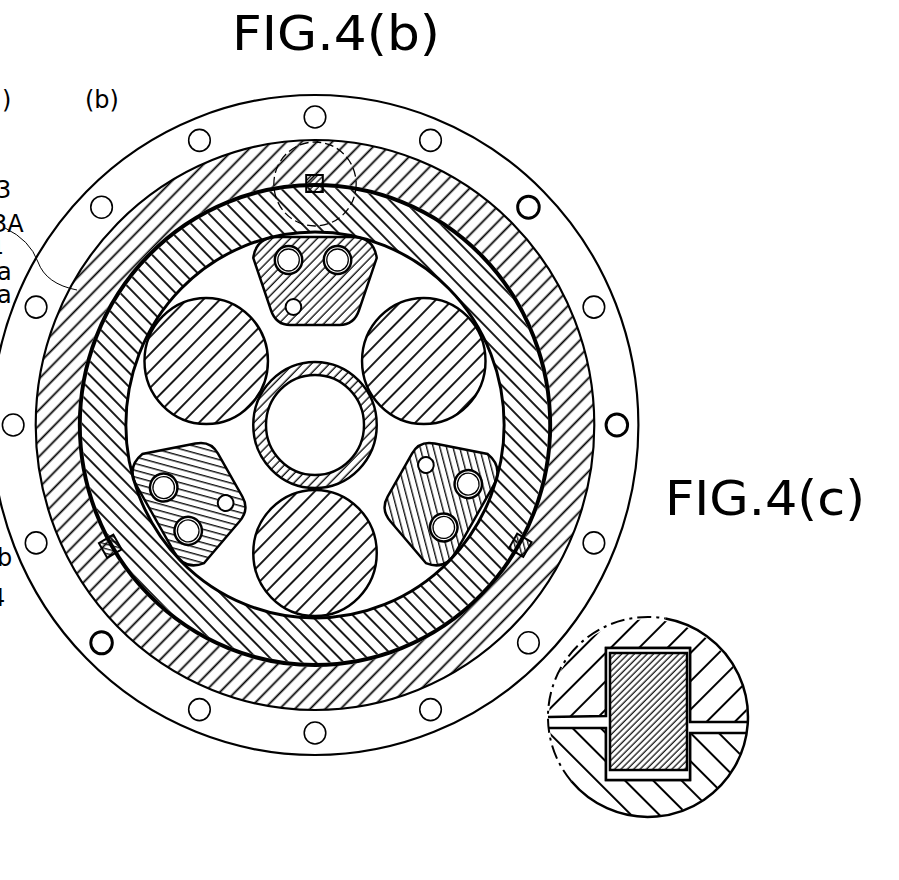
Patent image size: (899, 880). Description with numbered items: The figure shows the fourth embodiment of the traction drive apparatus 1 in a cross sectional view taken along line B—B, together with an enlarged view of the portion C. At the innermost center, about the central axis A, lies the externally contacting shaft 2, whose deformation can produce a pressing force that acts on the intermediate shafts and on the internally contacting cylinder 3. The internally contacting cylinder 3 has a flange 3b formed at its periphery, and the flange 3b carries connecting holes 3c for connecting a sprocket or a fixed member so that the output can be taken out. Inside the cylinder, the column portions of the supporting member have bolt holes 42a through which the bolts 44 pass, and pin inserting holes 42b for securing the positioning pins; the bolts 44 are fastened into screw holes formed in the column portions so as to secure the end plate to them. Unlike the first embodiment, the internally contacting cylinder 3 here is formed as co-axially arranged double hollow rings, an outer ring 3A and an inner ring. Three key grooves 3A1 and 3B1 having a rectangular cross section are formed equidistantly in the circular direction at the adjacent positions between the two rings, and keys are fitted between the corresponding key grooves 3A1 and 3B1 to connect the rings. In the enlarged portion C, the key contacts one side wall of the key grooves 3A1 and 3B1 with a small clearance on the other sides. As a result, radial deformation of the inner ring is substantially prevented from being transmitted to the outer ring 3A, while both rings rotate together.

The reduction gear device 1 is at (353, 490).
The externally contacting shaft 2 is at (270, 415).
The internally contacting cylinder 3 is at (548, 187).
The flange 3b is at (590, 277).
The connecting holes 3c is at (627, 424).
The outer ring 3A is at (640, 620).
The key groove 3A1 is at (688, 645).
The key groove 3B1 is at (622, 772).
The bolt holes 42a is at (343, 262).
The pin inserting holes 42b is at (293, 316).
The bolts 44 is at (283, 262).
The center axis A is at (313, 423).
The portion C is at (335, 157).